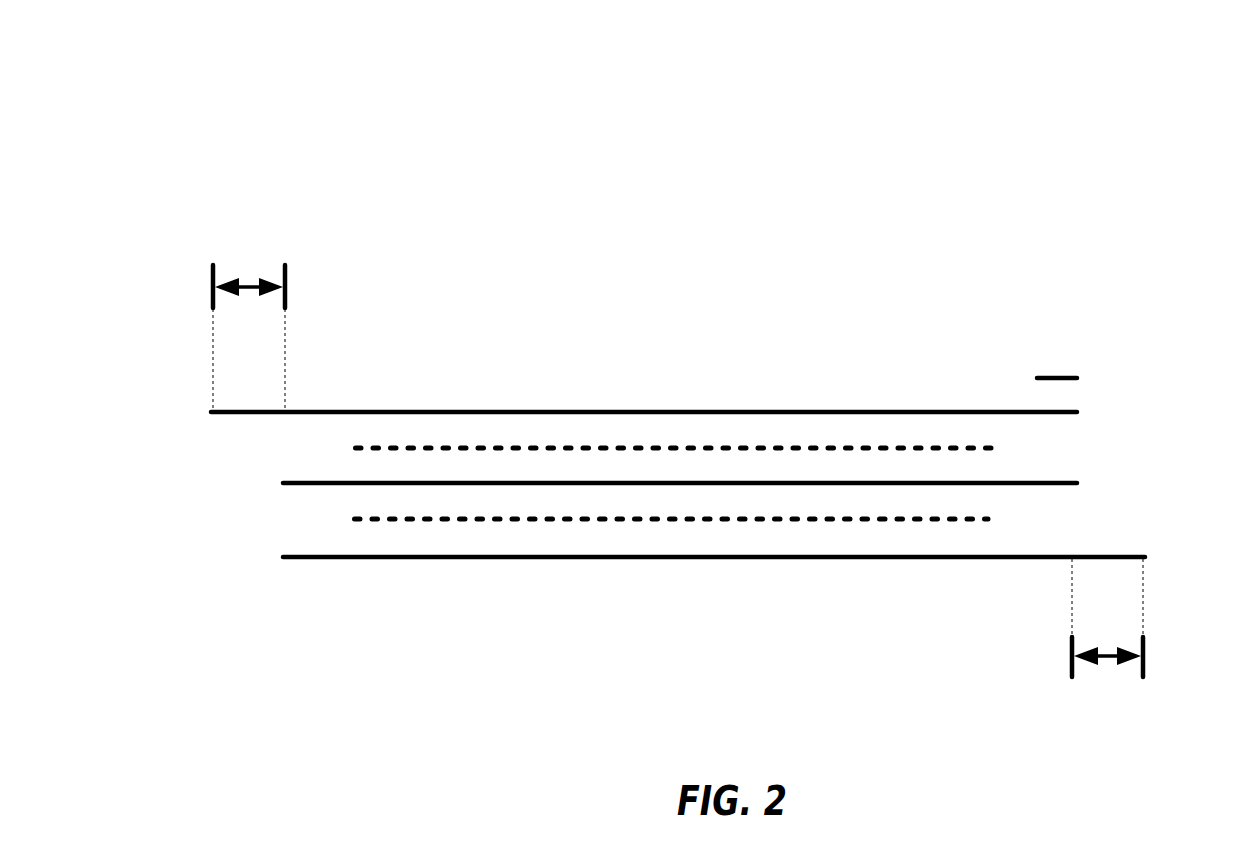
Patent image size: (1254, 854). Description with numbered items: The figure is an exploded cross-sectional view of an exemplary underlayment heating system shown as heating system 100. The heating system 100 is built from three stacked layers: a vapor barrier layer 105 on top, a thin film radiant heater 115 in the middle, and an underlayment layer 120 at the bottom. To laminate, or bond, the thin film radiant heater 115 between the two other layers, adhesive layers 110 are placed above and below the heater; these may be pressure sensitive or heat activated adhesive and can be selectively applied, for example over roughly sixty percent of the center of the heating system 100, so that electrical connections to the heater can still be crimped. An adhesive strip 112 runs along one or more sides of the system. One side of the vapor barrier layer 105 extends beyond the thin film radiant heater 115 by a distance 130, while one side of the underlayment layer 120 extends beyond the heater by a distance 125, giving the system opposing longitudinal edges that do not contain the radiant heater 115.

The heating system 100 is at (893, 200).
The vapor barrier layer 105 is at (383, 411).
The adhesive layers 110 is at (702, 448).
The adhesive strip 112 is at (1065, 378).
The thin film radiant heater 115 is at (283, 483).
The underlayment layer 120 is at (848, 558).
The distance 125 is at (1107, 658).
The distance 130 is at (247, 287).